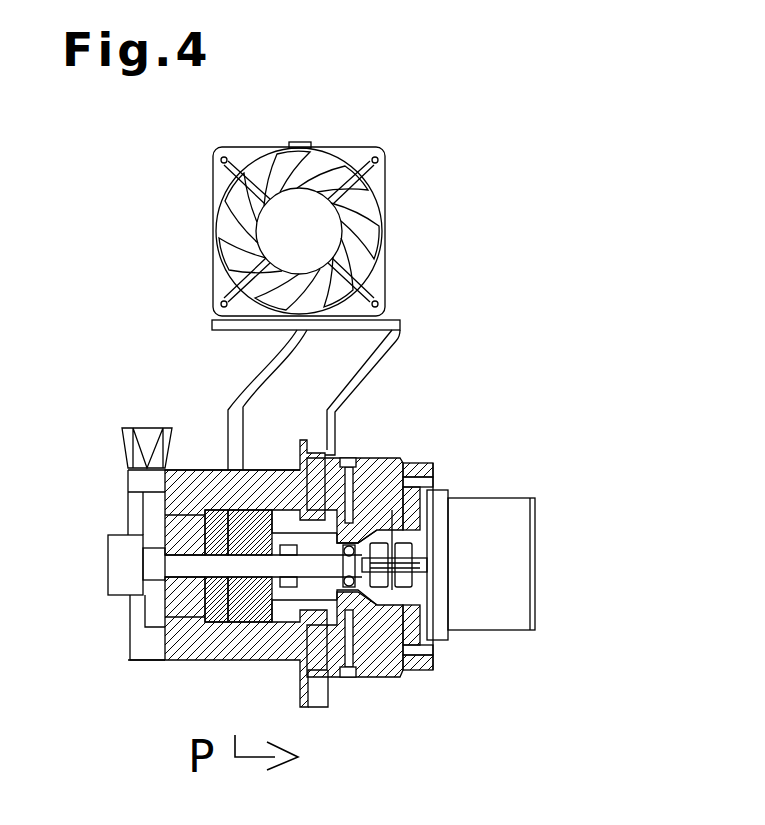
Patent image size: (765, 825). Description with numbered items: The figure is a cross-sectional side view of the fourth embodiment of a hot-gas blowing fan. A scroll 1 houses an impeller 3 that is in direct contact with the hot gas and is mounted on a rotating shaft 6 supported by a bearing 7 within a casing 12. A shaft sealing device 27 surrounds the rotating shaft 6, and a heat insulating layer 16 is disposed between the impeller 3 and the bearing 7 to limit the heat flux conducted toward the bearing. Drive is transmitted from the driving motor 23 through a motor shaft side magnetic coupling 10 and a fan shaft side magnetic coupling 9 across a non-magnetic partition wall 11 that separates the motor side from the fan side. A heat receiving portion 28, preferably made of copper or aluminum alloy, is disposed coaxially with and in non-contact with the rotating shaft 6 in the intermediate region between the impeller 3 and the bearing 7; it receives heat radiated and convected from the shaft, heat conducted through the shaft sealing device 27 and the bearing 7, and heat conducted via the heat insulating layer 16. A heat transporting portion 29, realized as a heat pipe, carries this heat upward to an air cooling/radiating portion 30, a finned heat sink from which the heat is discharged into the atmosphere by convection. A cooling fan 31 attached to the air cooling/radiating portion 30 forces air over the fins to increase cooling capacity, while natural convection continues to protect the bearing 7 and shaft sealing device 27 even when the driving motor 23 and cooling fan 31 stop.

The scroll 1 is at (156, 662).
The impeller 3 is at (150, 563).
The rotating shaft 6 is at (233, 628).
The bearing 7 is at (273, 640).
The fan shaft side magnetic coupling 9 is at (437, 475).
The motor shaft side magnetic coupling 10 is at (405, 557).
The non-magnetic partition wall 11 is at (443, 497).
The casing 12 is at (383, 458).
The heat insulating layer 16 is at (215, 478).
The driving motor 23 is at (540, 586).
The shaft sealing device 27 is at (210, 633).
The heat receiving portion 28 is at (243, 478).
The heat transporting portion 29 is at (242, 382).
The air cooling/radiating portion 30 is at (430, 148).
The cooling fan 31 is at (215, 240).